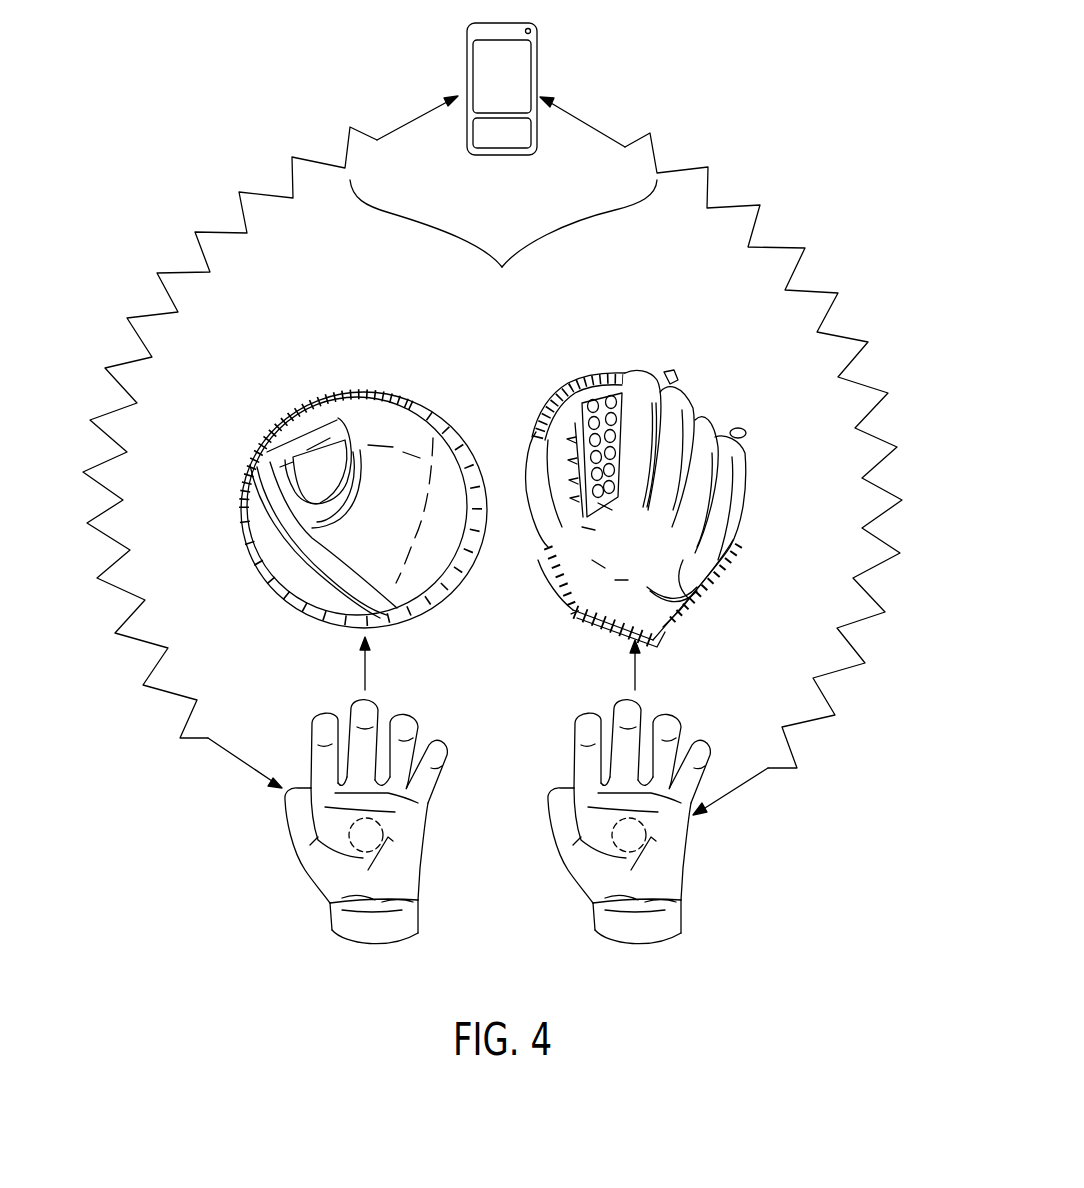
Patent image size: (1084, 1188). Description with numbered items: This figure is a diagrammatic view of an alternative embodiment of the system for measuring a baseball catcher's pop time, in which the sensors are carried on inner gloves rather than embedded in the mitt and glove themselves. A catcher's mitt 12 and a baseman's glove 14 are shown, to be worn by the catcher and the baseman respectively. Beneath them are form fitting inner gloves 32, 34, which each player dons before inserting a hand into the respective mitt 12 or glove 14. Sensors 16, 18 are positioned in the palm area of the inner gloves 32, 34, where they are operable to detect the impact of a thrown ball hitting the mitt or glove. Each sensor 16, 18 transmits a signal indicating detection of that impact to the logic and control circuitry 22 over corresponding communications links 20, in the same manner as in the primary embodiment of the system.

The catcher's mitt 12 is at (386, 390).
The baseman's glove 14 is at (648, 373).
The sensor 16 is at (388, 837).
The sensor 18 is at (651, 837).
The communications links 20 is at (492, 455).
The logic and control circuitry 22 is at (537, 62).
The inner glove 32 is at (380, 822).
The inner glove 34 is at (643, 822).